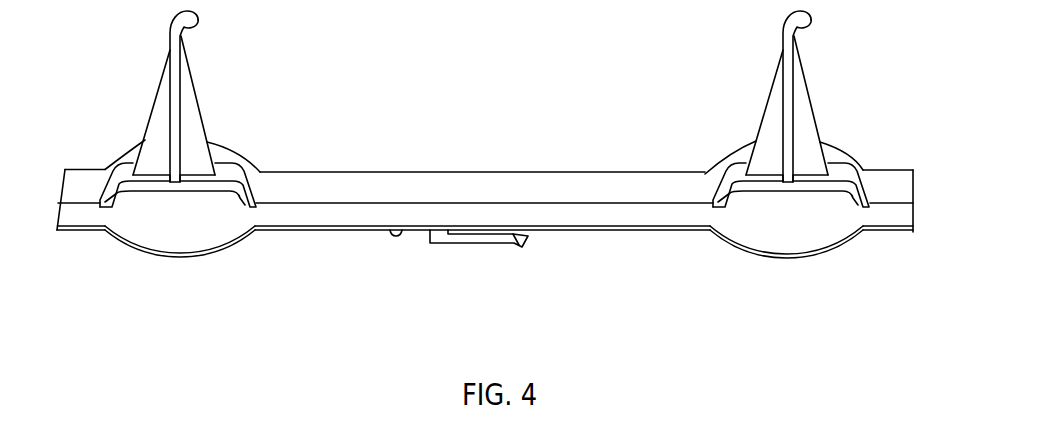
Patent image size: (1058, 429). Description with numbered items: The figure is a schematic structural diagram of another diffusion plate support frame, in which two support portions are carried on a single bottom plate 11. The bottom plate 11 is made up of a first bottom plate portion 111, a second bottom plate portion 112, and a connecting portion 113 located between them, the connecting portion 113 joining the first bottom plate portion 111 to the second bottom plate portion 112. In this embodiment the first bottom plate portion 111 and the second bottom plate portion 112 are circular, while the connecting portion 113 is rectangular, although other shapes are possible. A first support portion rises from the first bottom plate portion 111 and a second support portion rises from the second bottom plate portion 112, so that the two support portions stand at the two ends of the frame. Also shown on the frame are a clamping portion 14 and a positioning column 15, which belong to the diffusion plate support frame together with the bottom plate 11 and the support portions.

The bottom plate 11 is at (597, 110).
The first bottom plate portion 111 is at (248, 158).
The second bottom plate portion 112 is at (722, 160).
The connecting portion 113 is at (475, 178).
The clamping portion 14 is at (498, 243).
The positioning column 15 is at (396, 236).